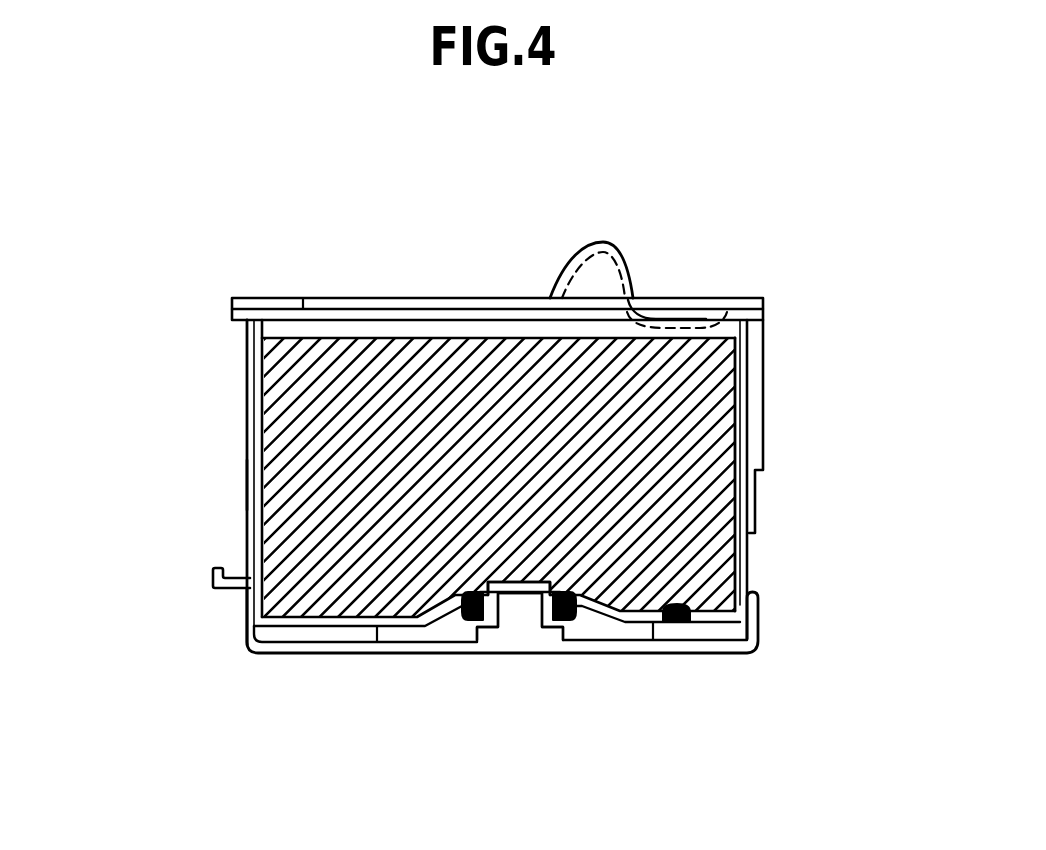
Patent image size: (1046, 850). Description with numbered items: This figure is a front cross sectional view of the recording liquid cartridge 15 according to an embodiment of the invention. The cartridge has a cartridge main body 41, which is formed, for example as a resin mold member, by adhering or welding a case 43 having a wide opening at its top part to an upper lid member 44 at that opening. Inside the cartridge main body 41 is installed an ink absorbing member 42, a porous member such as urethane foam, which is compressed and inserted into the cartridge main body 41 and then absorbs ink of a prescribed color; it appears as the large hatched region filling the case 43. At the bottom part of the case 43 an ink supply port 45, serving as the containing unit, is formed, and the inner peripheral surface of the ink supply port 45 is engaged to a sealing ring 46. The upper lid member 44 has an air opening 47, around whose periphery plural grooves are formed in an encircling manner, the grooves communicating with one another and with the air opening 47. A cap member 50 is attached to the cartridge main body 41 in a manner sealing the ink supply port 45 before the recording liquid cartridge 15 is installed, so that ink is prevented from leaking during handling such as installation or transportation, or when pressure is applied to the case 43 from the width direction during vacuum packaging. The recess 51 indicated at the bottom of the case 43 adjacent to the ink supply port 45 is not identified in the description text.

The recording liquid cartridge 15 is at (834, 304).
The cartridge main body 41 is at (247, 485).
The ink absorbing member 42 is at (630, 498).
The case 43 is at (247, 405).
The upper lid member 44 is at (458, 298).
The ink supply port 45 is at (498, 600).
The sealing ring 46 is at (478, 636).
The air opening 47 is at (303, 299).
The cap member 50 is at (360, 655).
The recess 51 is at (521, 590).